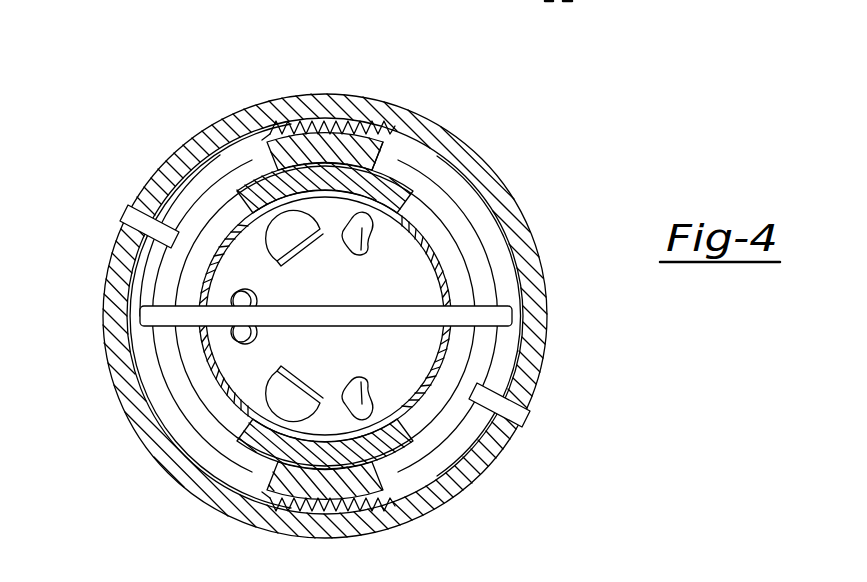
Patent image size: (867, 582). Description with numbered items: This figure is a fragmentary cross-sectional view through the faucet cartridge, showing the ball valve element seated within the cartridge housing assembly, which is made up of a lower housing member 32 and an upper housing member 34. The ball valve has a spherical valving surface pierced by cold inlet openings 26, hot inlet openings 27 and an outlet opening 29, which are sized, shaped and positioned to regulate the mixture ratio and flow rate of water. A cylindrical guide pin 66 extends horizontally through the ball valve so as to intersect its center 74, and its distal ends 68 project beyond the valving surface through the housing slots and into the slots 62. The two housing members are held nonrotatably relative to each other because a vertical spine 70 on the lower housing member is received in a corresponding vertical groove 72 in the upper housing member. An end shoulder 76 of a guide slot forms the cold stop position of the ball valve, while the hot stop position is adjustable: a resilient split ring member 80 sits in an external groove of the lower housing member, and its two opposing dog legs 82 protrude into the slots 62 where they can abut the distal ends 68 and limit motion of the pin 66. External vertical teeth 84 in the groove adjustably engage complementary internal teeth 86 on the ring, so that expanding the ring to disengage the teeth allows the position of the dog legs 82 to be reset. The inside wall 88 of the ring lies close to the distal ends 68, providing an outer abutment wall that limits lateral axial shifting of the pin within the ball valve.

The guide slot 62 is at (175, 400).
The split ring member 80 is at (181, 150).
The distal ends of the guide pin 68 is at (510, 253).
The inside wall of the ring 88 is at (78, 352).
The end shoulder 76 is at (445, 195).
The dog legs 82 is at (130, 214).
The external teeth 84 is at (300, 126).
The vertical groove 72 is at (262, 140).
The vertical spine 70 is at (337, 150).
The lower housing member 32 is at (375, 140).
The internal teeth 86 is at (385, 133).
The upper housing member 34 is at (402, 176).
The center of ball valve 74 is at (326, 316).
The cylindrical guide pin 66 is at (277, 315).
The outlet opening 29 is at (250, 340).
The cold inlet openings 26 is at (360, 252).
The hot inlet openings 27 is at (355, 385).